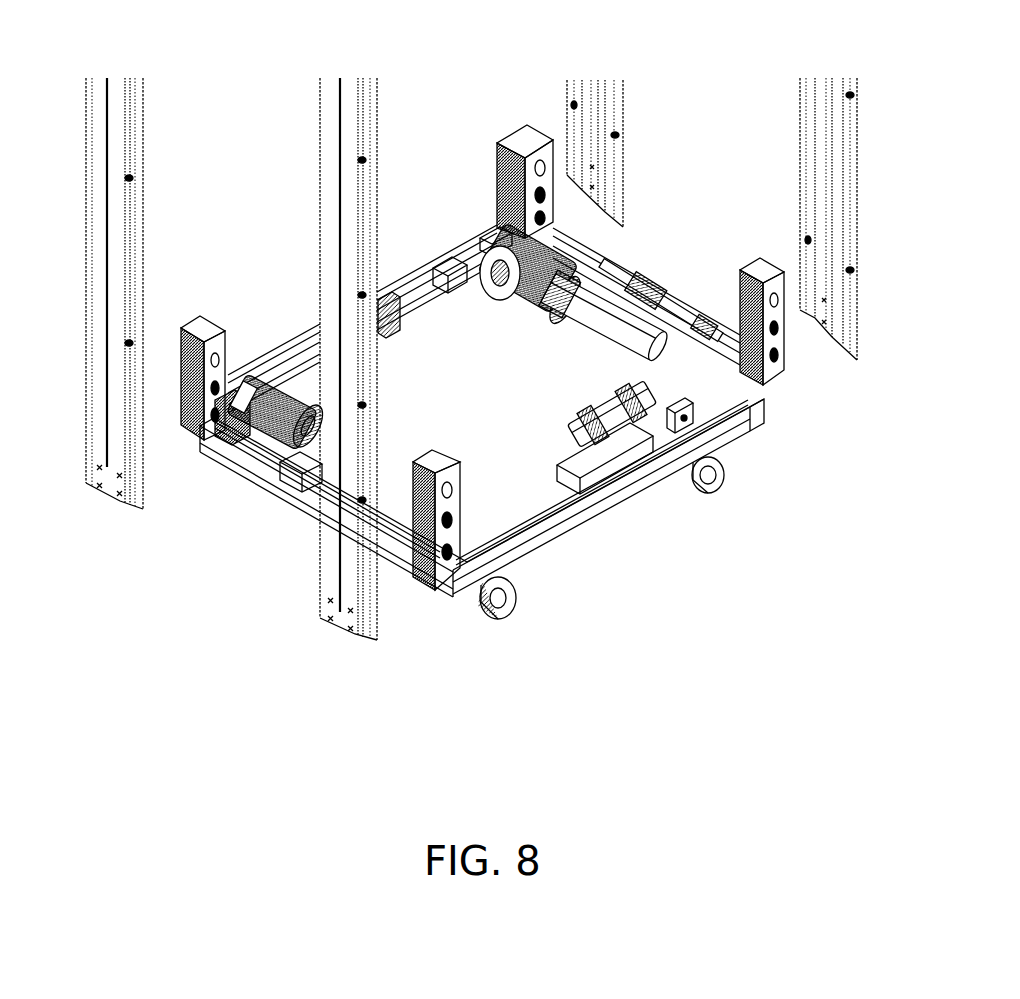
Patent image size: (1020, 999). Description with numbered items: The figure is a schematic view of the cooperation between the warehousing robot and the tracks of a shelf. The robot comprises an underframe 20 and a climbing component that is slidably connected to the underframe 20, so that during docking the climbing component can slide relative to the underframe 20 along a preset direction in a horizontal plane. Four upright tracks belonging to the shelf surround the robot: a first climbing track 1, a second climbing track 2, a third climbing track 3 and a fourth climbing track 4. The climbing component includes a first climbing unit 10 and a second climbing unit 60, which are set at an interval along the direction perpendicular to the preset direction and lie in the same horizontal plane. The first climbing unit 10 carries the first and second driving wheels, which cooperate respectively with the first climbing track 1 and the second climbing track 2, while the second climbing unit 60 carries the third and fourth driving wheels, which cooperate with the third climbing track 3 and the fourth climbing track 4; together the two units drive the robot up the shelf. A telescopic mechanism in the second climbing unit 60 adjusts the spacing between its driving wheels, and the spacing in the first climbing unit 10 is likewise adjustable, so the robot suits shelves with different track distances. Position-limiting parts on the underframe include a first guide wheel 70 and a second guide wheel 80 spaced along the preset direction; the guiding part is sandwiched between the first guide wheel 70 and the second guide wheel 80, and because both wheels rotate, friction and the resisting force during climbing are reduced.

The first climbing track 1 is at (350, 322).
The second climbing track 2 is at (860, 350).
The third climbing track 3 is at (132, 190).
The fourth climbing track 4 is at (597, 118).
The first climbing unit 10 is at (703, 440).
The underframe 20 is at (600, 515).
The second climbing unit 60 is at (275, 363).
The first guide wheel 70 is at (517, 587).
The second guide wheel 80 is at (437, 585).